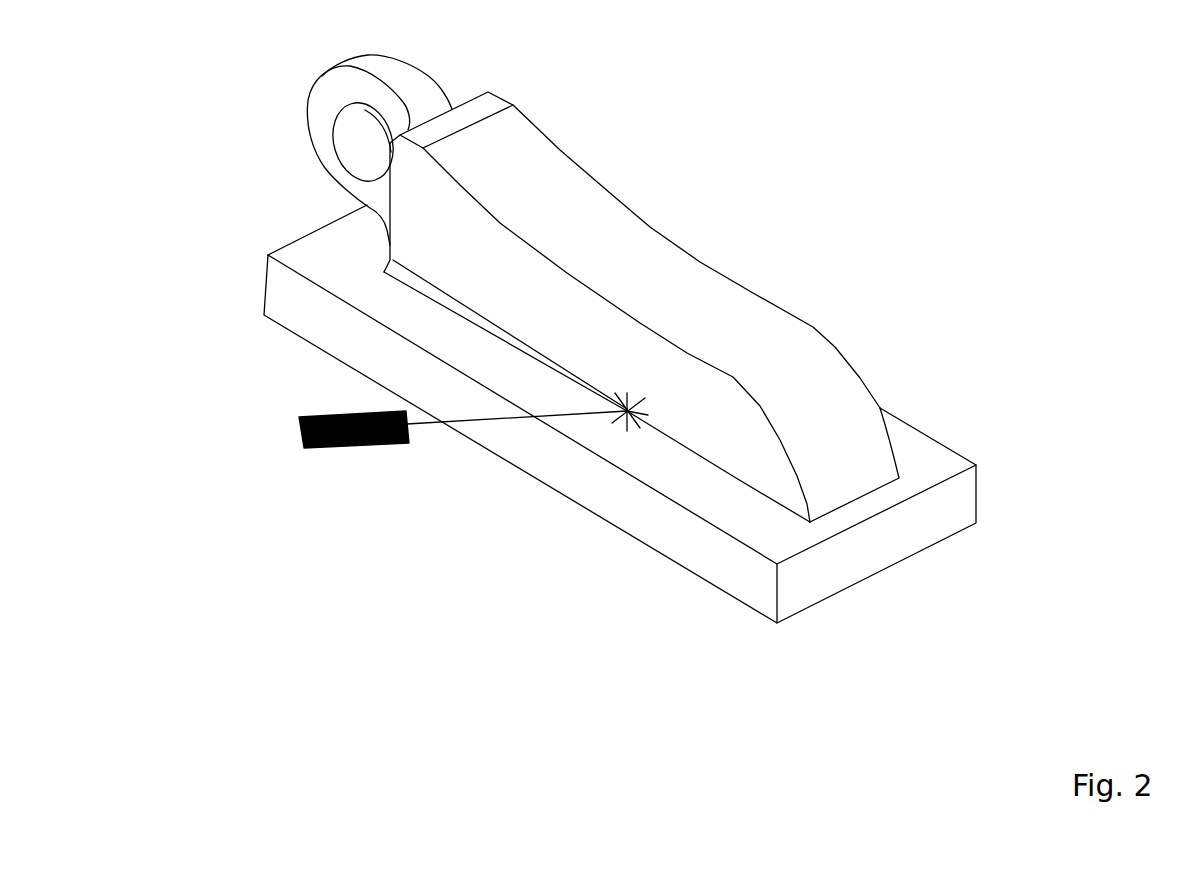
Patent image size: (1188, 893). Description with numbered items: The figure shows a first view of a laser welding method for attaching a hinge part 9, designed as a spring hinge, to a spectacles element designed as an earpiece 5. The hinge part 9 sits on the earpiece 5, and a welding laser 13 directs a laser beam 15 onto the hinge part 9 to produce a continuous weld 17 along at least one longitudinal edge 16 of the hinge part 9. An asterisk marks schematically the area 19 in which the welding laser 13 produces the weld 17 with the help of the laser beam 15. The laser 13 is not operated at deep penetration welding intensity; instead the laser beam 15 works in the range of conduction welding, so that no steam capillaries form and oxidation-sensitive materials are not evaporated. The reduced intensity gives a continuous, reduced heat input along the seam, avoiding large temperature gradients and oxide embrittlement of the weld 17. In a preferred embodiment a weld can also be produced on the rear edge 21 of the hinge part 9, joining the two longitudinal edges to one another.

The earpiece 5 is at (635, 513).
The hinge part 9 is at (563, 341).
The welding laser 13 is at (346, 446).
The laser beam 15 is at (432, 427).
The longitudinal edge 16 is at (736, 478).
The weld 17 is at (423, 285).
The area 19 is at (647, 383).
The rear edge 21 is at (858, 500).